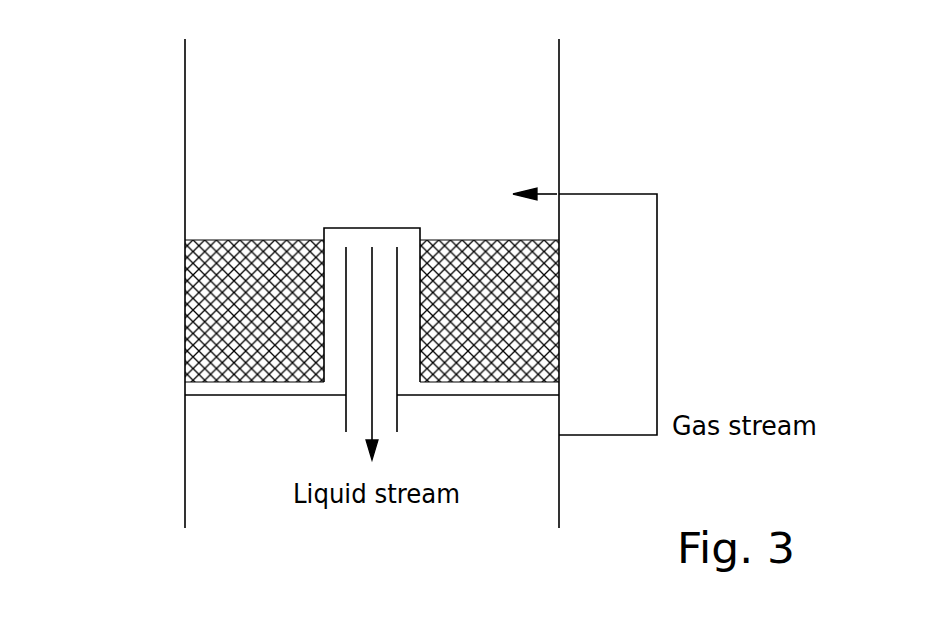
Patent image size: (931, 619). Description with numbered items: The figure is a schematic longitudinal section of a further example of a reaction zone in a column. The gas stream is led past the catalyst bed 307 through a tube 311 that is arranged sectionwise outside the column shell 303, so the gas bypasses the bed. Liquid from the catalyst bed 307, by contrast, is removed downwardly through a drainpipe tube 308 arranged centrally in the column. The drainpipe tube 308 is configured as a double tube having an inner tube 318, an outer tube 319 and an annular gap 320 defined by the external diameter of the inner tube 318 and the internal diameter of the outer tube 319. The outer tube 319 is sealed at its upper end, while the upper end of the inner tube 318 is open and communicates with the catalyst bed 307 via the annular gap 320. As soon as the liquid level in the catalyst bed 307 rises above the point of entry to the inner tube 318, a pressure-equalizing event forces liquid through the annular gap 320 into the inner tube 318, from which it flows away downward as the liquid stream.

The column shell 303 is at (559, 122).
The catalyst bed 307 is at (224, 339).
The drainpipe tube 308 is at (365, 295).
The tube 311 is at (658, 300).
The inner tube 318 is at (347, 270).
The outer tube 319 is at (363, 228).
The annular gap 320 is at (408, 333).